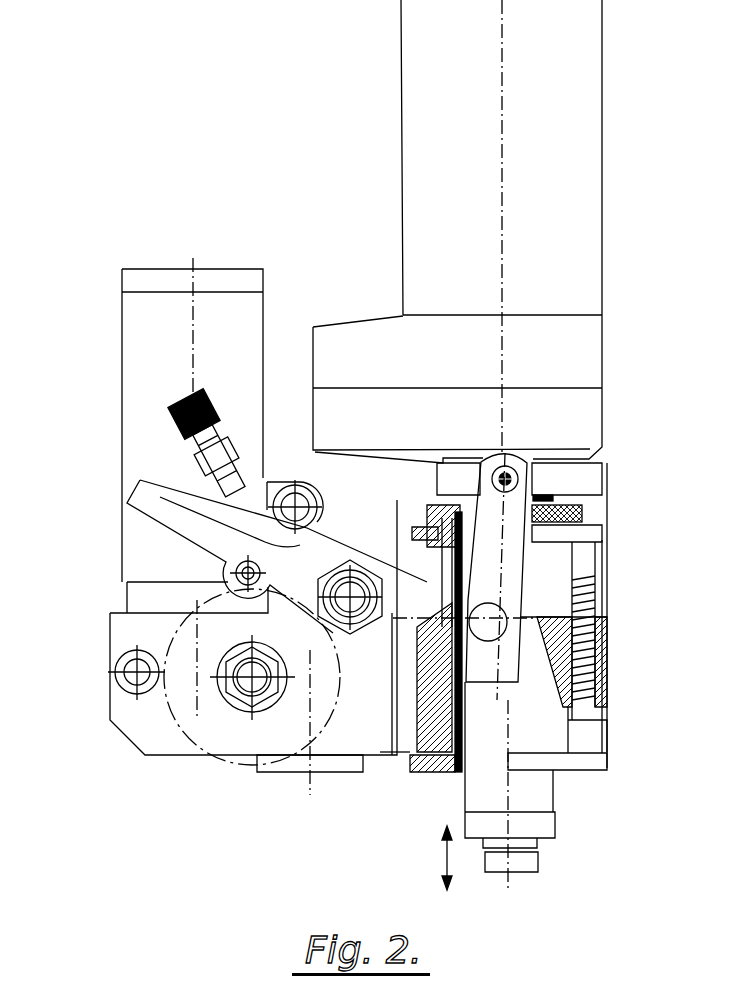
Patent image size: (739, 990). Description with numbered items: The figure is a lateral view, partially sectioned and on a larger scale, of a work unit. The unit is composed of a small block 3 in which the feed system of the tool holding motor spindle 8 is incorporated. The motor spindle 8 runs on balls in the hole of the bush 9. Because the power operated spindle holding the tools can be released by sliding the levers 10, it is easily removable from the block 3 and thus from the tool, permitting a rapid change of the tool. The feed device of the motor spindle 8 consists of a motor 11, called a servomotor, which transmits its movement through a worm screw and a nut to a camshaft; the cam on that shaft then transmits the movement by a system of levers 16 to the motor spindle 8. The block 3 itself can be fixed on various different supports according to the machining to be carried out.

The block 3 is at (152, 740).
The motor spindle 8 is at (416, 131).
The bush 9 is at (430, 770).
The levers 10 is at (503, 517).
The motor 11 is at (177, 305).
The levers 16 is at (142, 495).